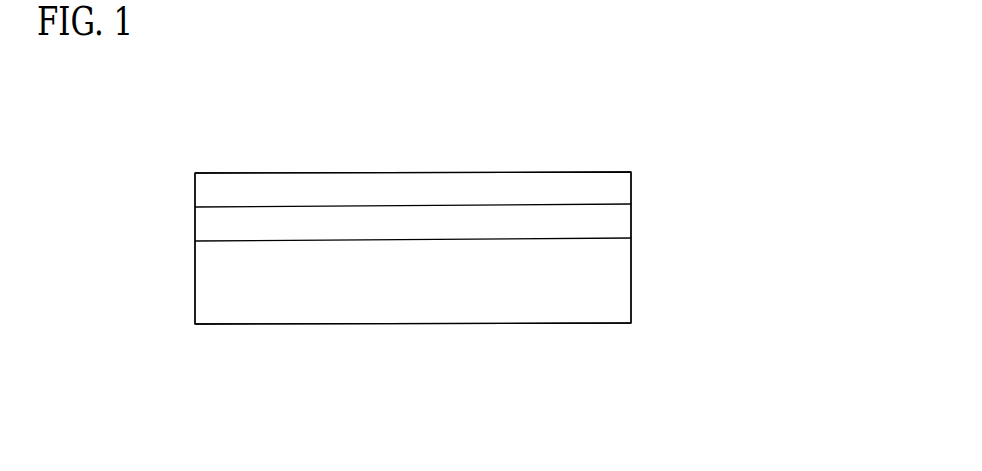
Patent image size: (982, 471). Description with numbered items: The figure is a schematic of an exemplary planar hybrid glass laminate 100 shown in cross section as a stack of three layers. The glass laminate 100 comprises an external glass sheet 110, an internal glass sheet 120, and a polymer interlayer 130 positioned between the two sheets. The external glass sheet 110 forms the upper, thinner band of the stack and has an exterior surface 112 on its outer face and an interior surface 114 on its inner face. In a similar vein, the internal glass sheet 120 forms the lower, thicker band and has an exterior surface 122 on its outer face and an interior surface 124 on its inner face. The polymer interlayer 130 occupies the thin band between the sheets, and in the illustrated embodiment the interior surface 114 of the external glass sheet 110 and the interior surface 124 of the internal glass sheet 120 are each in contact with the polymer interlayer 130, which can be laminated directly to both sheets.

The glass laminate 100 is at (632, 94).
The external glass sheet 110 is at (449, 186).
The exterior surface 112 is at (235, 173).
The interior surface 114 is at (223, 208).
The internal glass sheet 120 is at (445, 288).
The exterior surface 122 is at (582, 323).
The interior surface 124 is at (603, 238).
The polymer interlayer 130 is at (540, 220).